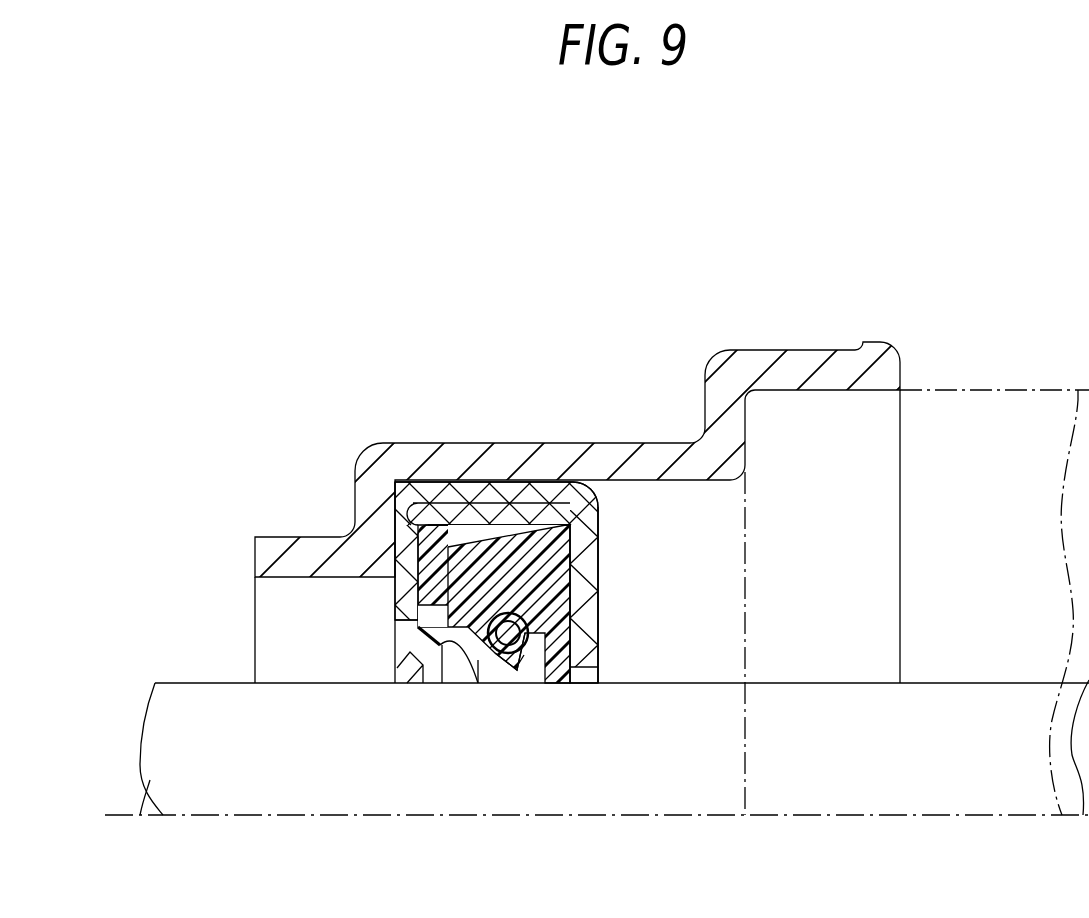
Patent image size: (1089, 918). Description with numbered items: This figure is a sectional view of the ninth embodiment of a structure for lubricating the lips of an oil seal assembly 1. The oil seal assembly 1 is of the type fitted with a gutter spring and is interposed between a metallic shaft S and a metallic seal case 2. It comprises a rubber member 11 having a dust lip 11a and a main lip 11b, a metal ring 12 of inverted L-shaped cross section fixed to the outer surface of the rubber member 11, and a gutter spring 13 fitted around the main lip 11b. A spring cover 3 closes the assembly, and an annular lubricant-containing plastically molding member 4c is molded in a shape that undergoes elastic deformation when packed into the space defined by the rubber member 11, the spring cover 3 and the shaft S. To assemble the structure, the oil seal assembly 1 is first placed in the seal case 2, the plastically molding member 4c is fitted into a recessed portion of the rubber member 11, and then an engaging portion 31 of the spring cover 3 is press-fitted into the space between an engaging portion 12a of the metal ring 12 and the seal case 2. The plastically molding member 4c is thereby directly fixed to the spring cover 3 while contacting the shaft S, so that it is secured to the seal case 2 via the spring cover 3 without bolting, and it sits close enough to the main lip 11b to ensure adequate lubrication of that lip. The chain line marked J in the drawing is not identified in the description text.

The oil seal assembly 1 is at (395, 618).
The seal case 2 is at (606, 442).
The spring cover 3 is at (598, 545).
The plastically molding member 4c is at (565, 526).
The rubber member 11 is at (424, 574).
The dust lip 11a is at (420, 655).
The main lip 11b is at (516, 668).
The metal ring 12 is at (410, 503).
The engaging portion of metal ring 12a is at (494, 505).
The gutter spring 13 is at (500, 655).
The engaging portion of spring cover 31 is at (440, 497).
The joint boundary line J is at (986, 390).
The shaft S is at (198, 800).